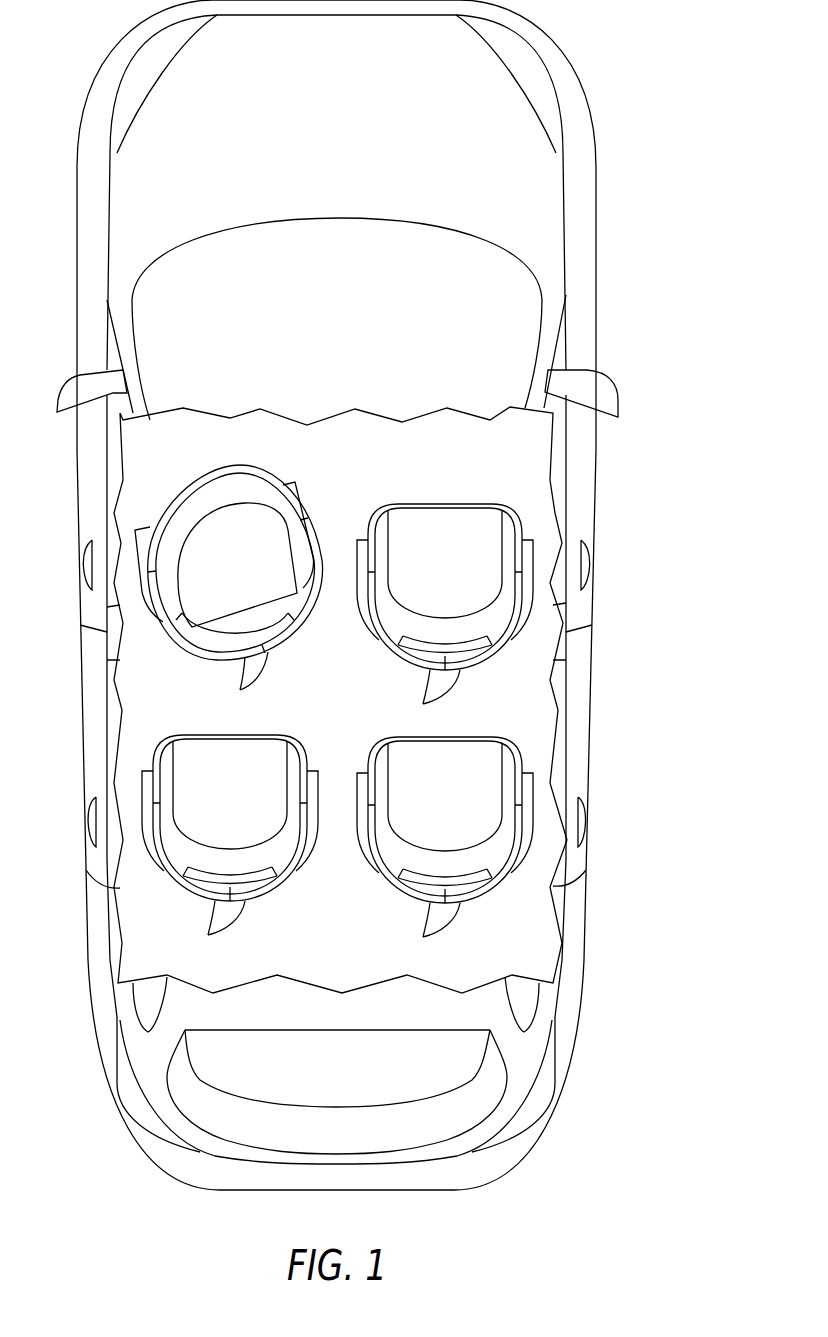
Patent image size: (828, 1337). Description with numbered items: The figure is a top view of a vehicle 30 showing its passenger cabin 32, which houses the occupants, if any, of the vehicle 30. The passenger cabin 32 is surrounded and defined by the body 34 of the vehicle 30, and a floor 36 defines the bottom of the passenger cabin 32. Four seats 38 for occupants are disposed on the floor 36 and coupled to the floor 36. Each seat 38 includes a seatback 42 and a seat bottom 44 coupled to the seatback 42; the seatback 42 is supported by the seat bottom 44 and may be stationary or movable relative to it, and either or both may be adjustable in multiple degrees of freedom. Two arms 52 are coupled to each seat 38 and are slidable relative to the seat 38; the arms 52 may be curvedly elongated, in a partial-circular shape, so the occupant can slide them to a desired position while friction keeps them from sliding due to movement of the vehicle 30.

The vehicle 30 is at (605, 106).
The passenger cabin 32 is at (555, 485).
The body 34 is at (597, 282).
The floor 36 is at (336, 725).
The seat 38 is at (216, 462).
The seatback 42 is at (190, 475).
The seat bottom 44 is at (270, 613).
The arm 52 is at (252, 690).